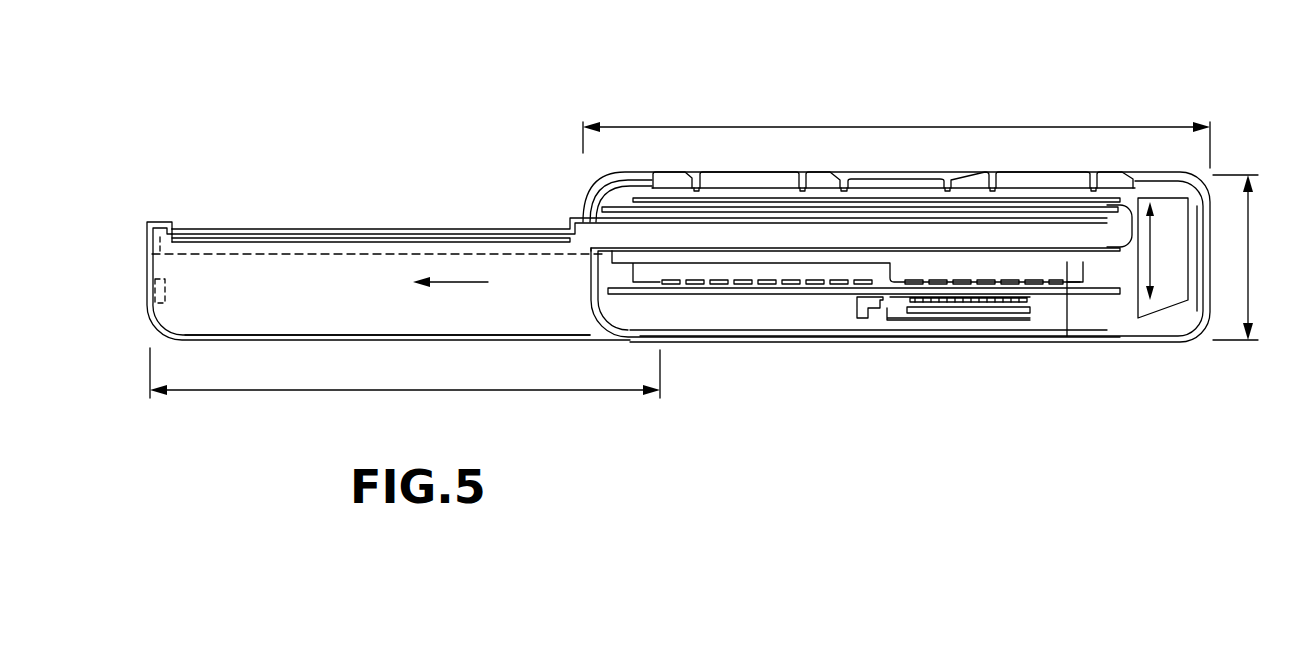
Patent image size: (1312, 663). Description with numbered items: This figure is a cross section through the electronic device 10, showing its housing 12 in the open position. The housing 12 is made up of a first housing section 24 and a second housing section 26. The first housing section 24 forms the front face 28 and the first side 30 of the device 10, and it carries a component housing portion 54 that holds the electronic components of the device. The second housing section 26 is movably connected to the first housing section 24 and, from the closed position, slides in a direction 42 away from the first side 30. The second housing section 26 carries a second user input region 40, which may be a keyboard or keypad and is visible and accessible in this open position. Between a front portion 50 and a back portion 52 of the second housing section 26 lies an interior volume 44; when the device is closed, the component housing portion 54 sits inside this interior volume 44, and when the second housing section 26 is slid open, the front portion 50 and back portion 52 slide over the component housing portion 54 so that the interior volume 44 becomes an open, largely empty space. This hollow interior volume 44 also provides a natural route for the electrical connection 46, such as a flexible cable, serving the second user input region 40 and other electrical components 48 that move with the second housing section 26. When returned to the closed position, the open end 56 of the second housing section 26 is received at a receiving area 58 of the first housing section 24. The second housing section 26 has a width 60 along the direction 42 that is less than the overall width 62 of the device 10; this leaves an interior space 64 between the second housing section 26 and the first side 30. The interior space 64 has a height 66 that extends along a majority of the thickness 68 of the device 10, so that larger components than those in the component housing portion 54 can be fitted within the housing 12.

The electronic device 10 is at (330, 82).
The housing 12 is at (1150, 342).
The first housing section 24 is at (1078, 342).
The second housing section 26 is at (152, 334).
The front face 28 is at (620, 173).
The first side 30 is at (1210, 300).
The second user input region 40 is at (213, 226).
The direction 42 is at (487, 275).
The interior volume 44 is at (297, 273).
The electrical connection 46 is at (148, 236).
The electrical components 48 is at (150, 296).
The front portion 50 is at (343, 240).
The back portion 52 is at (268, 343).
The component housing portion 54 is at (590, 293).
The open end 56 is at (668, 226).
The receiving area 58 is at (1107, 230).
The width 60 is at (384, 392).
The overall width 62 is at (848, 126).
The interior space 64 is at (1160, 302).
The height 66 is at (1153, 262).
The thickness 68 is at (1251, 234).